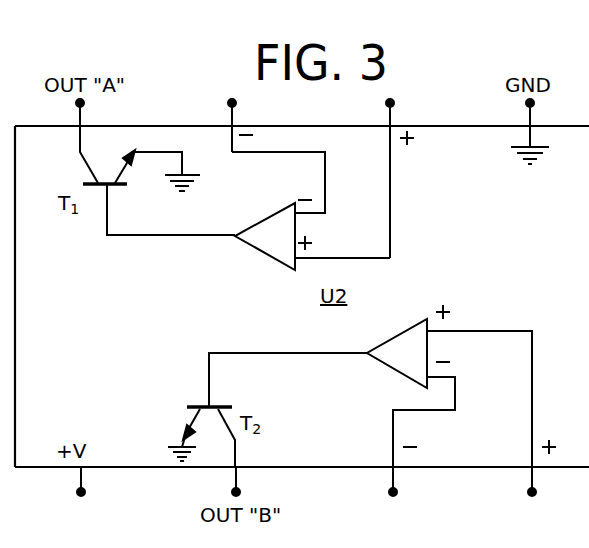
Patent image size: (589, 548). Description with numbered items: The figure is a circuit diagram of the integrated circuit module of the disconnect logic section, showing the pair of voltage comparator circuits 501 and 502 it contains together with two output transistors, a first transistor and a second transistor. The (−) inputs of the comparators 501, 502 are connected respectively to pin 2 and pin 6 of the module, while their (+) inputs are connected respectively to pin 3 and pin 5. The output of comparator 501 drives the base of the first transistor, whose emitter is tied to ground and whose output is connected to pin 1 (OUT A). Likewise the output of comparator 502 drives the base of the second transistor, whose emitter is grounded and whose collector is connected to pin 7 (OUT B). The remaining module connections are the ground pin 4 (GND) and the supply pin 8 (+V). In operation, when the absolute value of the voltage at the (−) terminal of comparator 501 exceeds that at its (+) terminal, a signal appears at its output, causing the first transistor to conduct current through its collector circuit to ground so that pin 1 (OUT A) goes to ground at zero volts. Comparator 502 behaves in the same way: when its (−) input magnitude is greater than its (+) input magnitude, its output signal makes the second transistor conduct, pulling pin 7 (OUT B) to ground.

The pin 1 (OUT A) 1 is at (72, 110).
The pin 2 is at (221, 123).
The pin 3 is at (380, 176).
The pin 4 (ground) 4 is at (526, 129).
The pin 5 is at (519, 482).
The pin 6 is at (381, 482).
The pin 7 (OUT B) 7 is at (223, 482).
The pin 8 (+V supply) 8 is at (65, 482).
The voltage comparator circuit 501 is at (250, 247).
The voltage comparator circuit 502 is at (383, 363).